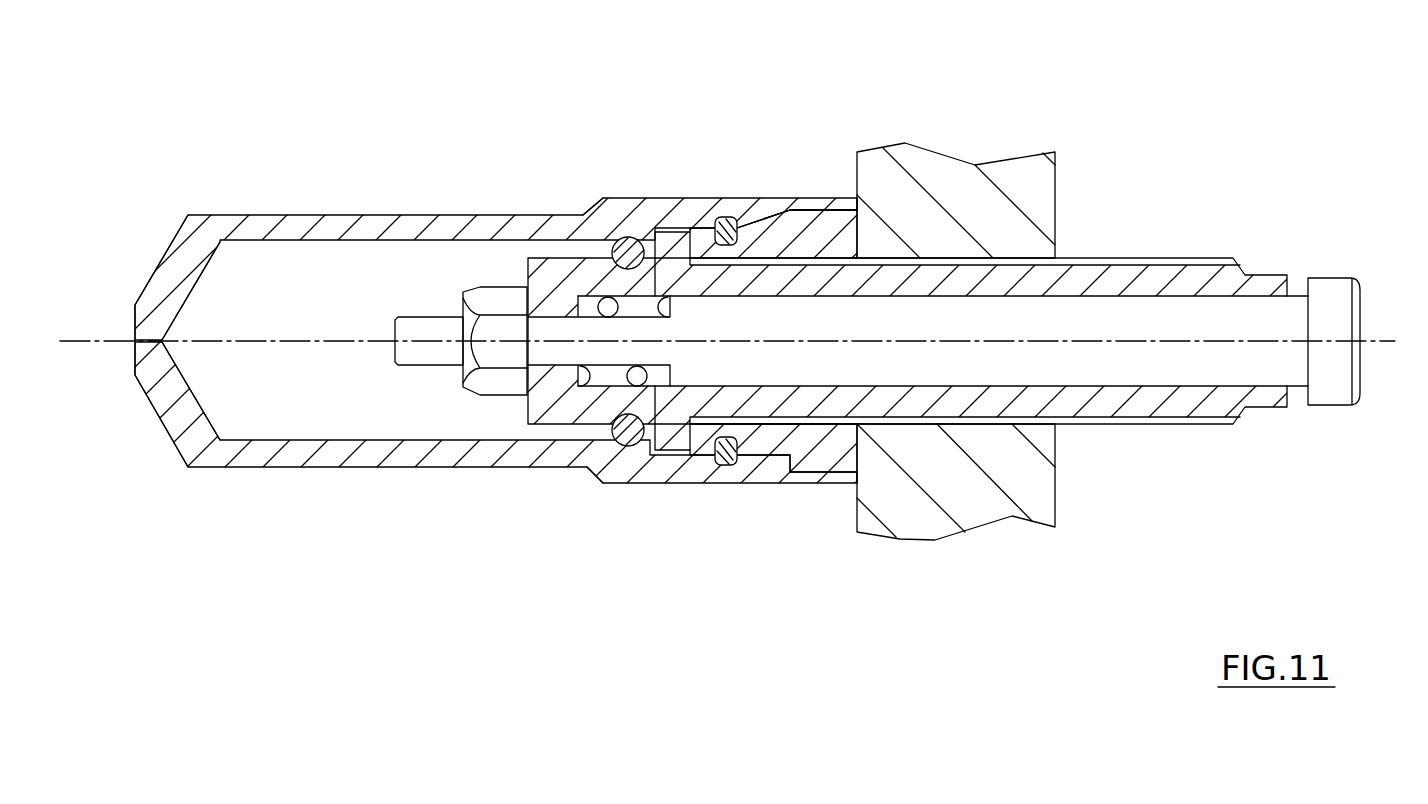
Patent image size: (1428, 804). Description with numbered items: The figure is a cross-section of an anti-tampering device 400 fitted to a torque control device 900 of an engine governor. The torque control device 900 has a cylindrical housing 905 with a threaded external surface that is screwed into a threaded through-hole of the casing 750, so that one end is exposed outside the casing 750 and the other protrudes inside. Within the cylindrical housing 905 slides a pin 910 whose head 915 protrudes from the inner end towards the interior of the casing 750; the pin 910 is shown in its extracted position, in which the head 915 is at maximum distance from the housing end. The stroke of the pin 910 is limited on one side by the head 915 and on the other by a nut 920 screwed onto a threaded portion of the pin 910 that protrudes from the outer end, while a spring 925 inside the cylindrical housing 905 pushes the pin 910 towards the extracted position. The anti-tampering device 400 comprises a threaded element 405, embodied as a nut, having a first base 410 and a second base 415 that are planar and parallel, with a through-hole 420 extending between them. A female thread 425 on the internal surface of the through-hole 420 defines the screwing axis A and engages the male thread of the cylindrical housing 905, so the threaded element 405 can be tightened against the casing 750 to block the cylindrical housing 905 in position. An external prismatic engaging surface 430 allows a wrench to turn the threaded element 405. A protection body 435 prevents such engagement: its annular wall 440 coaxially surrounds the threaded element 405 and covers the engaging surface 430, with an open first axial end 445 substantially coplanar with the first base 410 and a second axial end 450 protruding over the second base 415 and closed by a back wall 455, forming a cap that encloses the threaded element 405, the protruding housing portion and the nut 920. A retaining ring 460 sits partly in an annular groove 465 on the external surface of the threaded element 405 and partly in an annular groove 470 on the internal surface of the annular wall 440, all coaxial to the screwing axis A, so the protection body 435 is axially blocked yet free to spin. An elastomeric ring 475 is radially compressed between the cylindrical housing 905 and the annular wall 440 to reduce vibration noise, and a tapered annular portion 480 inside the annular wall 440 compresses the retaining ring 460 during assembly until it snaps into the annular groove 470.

The anti-tampering device 400 is at (200, 505).
The threaded element 405 is at (812, 440).
The first base 410 is at (863, 453).
The second base 415 is at (685, 237).
The through-hole 420 is at (808, 253).
The thread 425 is at (858, 252).
The engaging surface 430 is at (832, 207).
The protection body 435 is at (298, 213).
The annular wall 440 is at (710, 222).
The first axial end 445 is at (860, 197).
The second axial end 450 is at (150, 246).
The back wall 455 is at (178, 393).
The retaining ring 460 is at (710, 447).
The annular groove 465 is at (697, 457).
The annular groove 470 is at (732, 472).
The elastomeric ring 475 is at (618, 245).
The tapered annular portion 480 is at (768, 208).
The casing 750 is at (1025, 477).
The torque control device 900 is at (597, 123).
The cylindrical housing 905 is at (1195, 272).
The pin 910 is at (1170, 362).
The head 915 is at (1335, 297).
The nut 920 is at (493, 382).
The spring 925 is at (590, 373).
The screwing axis A is at (82, 333).